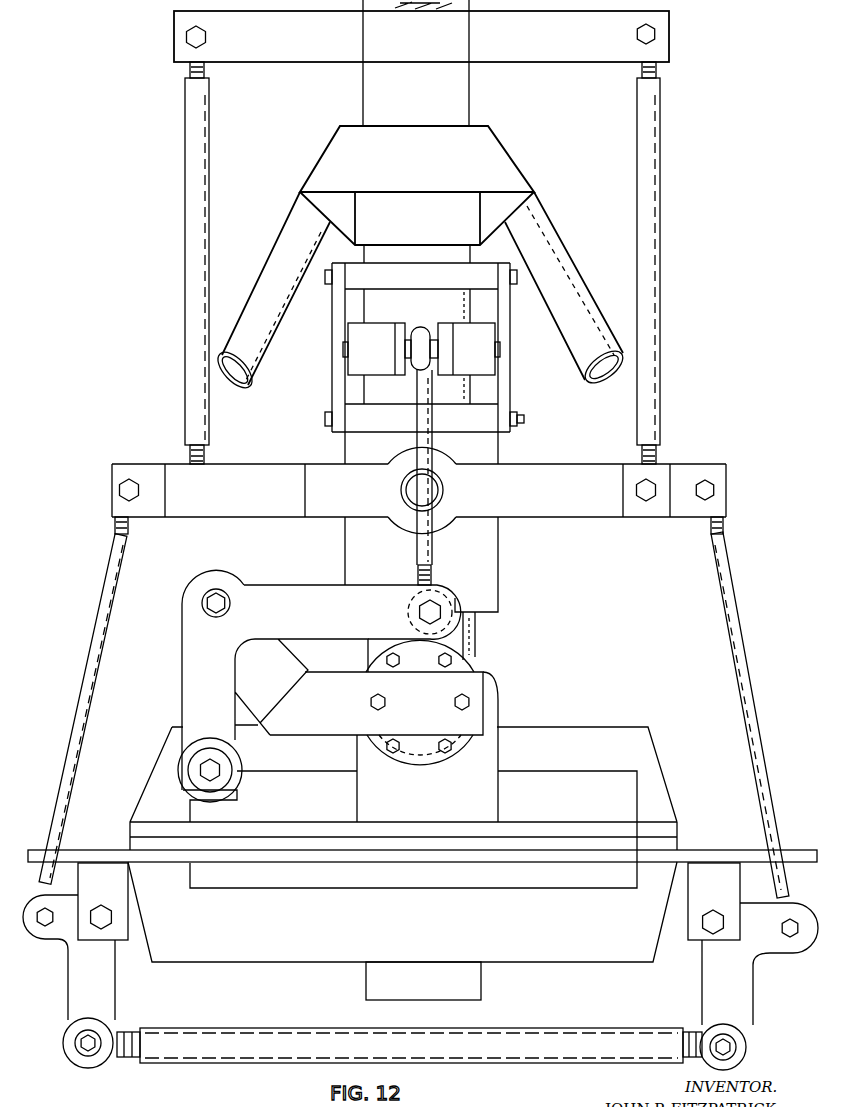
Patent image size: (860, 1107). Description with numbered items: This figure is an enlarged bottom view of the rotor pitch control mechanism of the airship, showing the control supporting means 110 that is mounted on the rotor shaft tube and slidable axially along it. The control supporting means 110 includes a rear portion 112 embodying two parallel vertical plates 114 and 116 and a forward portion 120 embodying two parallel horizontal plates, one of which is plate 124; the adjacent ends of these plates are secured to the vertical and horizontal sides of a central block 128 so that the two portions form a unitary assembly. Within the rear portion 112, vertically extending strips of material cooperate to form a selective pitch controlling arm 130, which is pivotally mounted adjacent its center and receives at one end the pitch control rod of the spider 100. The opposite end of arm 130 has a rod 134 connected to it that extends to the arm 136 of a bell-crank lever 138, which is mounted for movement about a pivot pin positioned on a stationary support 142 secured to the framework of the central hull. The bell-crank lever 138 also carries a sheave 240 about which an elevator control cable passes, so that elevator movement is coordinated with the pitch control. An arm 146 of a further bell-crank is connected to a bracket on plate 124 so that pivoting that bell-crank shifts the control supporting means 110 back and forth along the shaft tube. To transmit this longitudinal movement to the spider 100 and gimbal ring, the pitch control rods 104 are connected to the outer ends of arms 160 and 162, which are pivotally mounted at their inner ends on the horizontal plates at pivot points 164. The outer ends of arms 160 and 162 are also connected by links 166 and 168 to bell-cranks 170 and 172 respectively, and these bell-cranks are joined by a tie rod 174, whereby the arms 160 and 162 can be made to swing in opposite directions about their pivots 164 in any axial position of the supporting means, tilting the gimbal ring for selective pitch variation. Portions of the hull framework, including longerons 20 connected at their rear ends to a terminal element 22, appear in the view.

The spider 100 is at (525, 48).
The pitch control rods 104 is at (185, 162).
The terminal element 22 is at (490, 165).
The longerons 20 is at (570, 330).
The rear portion 112 is at (326, 400).
The vertical plate 114 is at (505, 389).
The vertical plate 116 is at (345, 371).
The selective pitch controlling arm 130 is at (400, 367).
The central block 128 is at (433, 425).
The rod 134 is at (417, 549).
The control supporting means 110 is at (505, 460).
The pivot points 164 is at (405, 491).
The arm 162 is at (237, 507).
The arm 160 is at (592, 513).
The forward portion 120 is at (508, 551).
The horizontal plate 124 is at (483, 597).
The arm 136 is at (333, 596).
The arm 146 is at (202, 610).
The bell-crank lever 138 is at (200, 703).
The stationary support 142 is at (277, 677).
The sheave 240 is at (233, 783).
The link 168 is at (85, 688).
The link 166 is at (722, 600).
The bell-crank 172 is at (110, 999).
The bell-crank 170 is at (720, 985).
The tie rod 174 is at (350, 1028).